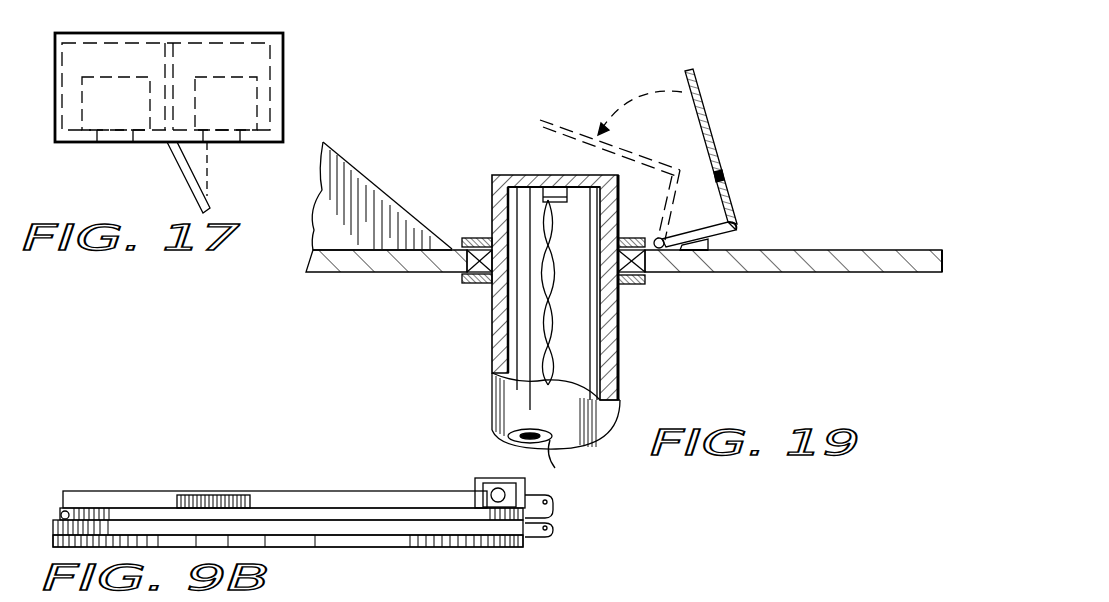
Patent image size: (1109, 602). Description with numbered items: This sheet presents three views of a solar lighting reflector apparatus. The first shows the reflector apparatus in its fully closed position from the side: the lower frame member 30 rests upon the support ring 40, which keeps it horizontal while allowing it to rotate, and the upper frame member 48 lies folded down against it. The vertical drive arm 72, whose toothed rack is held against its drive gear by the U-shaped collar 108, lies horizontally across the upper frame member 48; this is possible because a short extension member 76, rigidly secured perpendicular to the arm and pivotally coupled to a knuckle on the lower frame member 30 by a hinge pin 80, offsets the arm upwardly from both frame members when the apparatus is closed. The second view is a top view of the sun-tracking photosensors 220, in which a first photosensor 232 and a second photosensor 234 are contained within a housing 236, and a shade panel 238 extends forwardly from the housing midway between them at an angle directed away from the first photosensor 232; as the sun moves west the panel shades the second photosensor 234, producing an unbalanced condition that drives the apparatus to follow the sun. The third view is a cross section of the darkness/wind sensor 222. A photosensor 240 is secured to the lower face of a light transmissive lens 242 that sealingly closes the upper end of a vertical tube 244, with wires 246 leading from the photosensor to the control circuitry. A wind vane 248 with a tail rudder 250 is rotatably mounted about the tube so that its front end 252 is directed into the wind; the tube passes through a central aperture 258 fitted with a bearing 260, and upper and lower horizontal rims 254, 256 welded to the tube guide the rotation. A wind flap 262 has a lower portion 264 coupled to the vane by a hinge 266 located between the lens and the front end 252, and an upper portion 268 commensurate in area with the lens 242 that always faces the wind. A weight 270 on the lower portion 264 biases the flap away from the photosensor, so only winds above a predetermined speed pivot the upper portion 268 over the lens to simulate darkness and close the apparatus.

In FIG. 17, the tracking photosensors 220 is at (232, 24).
In FIG. 17, the first photosensor 232 is at (108, 142).
In FIG. 17, the second photosensor 234 is at (224, 142).
In FIG. 17, the housing 236 is at (284, 80).
In FIG. 17, the shade panel 238 is at (182, 172).
In FIG. 19, the darkness/wind sensor 222 is at (627, 268).
In FIG. 19, the photosensor 240 is at (555, 187).
In FIG. 19, the light transmissive lens 242 is at (517, 180).
In FIG. 19, the tube 244 is at (615, 370).
In FIG. 19, the wires 246 is at (568, 330).
In FIG. 19, the wind vane 248 is at (813, 260).
In FIG. 19, the tail rudder 250 is at (400, 210).
In FIG. 19, the front end 252 is at (948, 254).
In FIG. 19, the upper horizontal rim 254 is at (632, 238).
In FIG. 19, the lower horizontal rim 256 is at (628, 285).
In FIG. 19, the central aperture 258 is at (497, 286).
In FIG. 19, the bearing 260 is at (640, 258).
In FIG. 19, the wind flap 262 is at (673, 158).
In FIG. 19, the lower portion 264 is at (740, 236).
In FIG. 19, the hinge 266 is at (666, 239).
In FIG. 19, the upper portion 268 is at (712, 110).
In FIG. 19, the weight 270 is at (716, 245).
In FIG. 9B, the upper frame member 48 is at (272, 514).
In FIG. 9B, the vertical drive arm 72 is at (345, 502).
In FIG. 9B, the U-shaped collar 108 is at (478, 479).
In FIG. 9B, the lower frame member 30 is at (430, 530).
In FIG. 9B, the support ring 40 is at (370, 543).
In FIG. 9B, the extension member 76 is at (557, 507).
In FIG. 9B, the hinge pin 80 is at (548, 532).